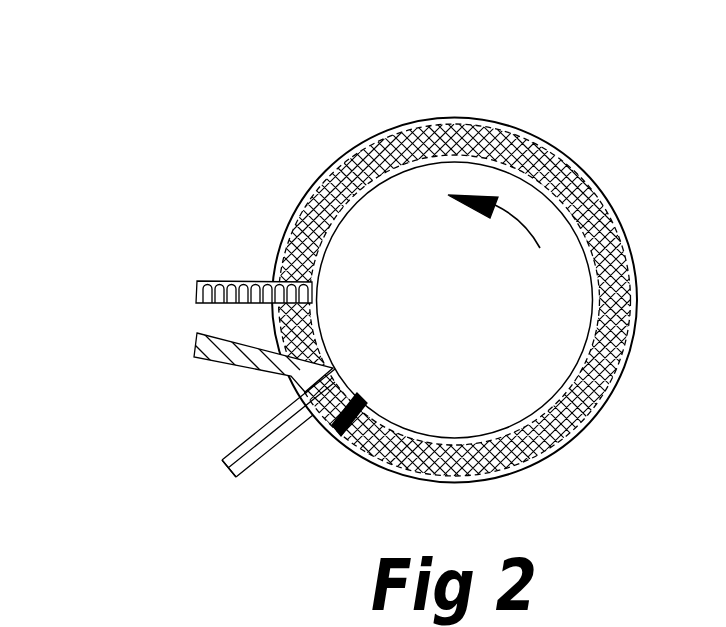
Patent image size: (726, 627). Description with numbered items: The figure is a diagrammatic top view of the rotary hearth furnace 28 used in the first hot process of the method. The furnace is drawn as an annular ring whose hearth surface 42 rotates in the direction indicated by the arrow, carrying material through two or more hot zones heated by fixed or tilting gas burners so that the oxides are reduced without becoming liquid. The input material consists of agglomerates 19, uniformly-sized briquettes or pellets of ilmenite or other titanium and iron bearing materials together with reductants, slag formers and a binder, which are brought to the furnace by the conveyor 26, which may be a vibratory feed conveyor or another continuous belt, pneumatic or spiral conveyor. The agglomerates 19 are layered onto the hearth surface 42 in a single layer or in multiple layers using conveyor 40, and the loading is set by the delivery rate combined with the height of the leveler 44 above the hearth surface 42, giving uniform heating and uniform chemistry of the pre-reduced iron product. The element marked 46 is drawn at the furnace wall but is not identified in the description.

The rotary hearth furnace 28 is at (142, 169).
The hearth surface 42 is at (302, 323).
The leveler 44 is at (365, 397).
The wiper strip 46 is at (197, 292).
The conveyor 26 is at (195, 358).
The agglomerates 19 is at (212, 475).
The conveyor 40 is at (258, 455).